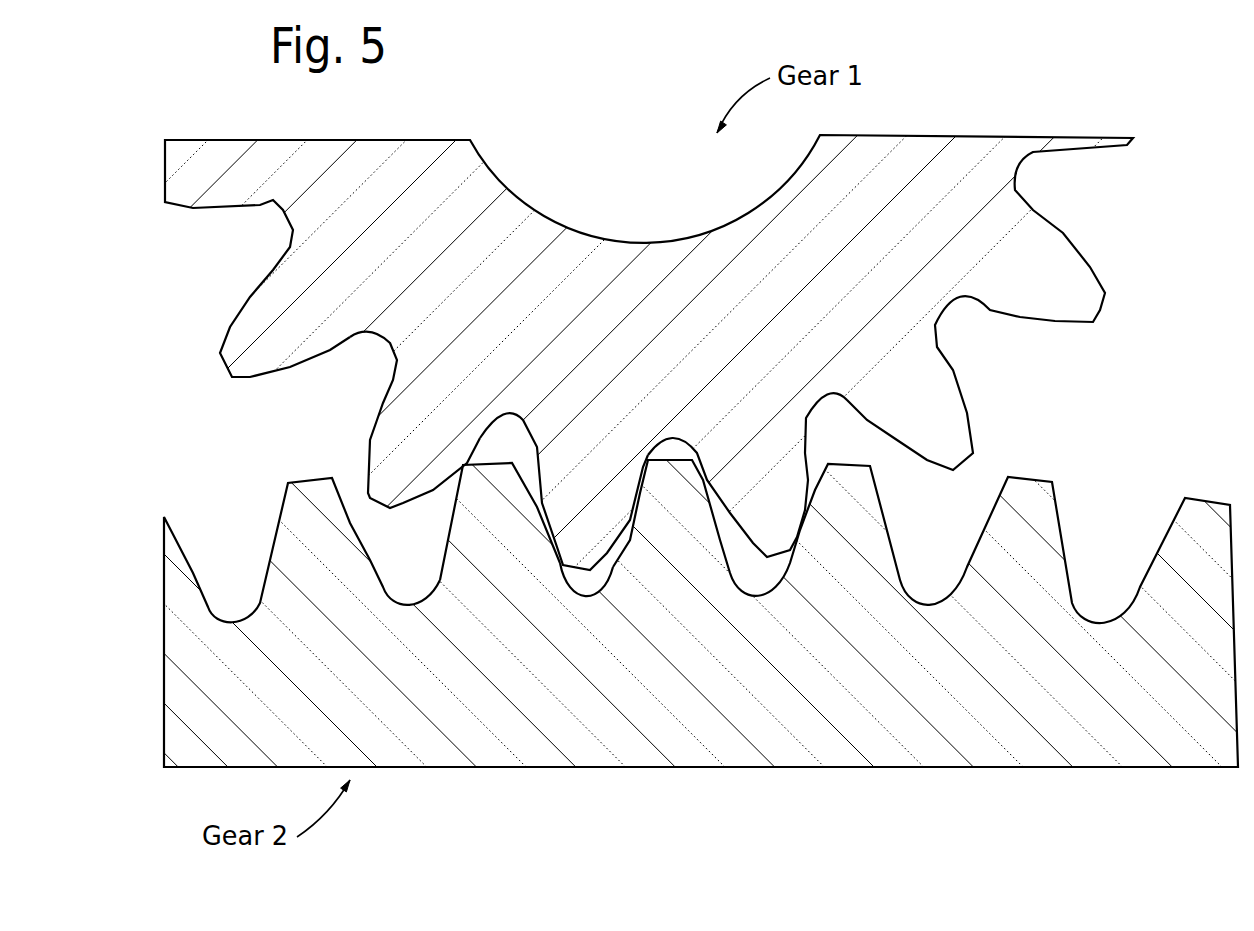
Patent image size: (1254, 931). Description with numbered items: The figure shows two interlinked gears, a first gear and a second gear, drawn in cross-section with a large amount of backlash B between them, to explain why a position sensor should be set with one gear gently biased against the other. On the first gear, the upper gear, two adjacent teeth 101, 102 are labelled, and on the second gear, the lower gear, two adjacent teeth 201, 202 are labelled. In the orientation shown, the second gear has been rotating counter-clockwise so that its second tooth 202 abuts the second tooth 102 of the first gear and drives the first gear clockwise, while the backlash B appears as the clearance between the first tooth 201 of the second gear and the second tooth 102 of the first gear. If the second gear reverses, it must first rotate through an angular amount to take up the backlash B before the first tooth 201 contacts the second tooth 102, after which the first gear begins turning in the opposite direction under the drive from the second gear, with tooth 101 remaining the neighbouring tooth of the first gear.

The first tooth of Gear1 101 is at (397, 470).
The second tooth of Gear1 102 is at (583, 530).
The first tooth of Gear2 201 is at (495, 490).
The second tooth of Gear2 202 is at (675, 490).
The backlash B is at (540, 512).